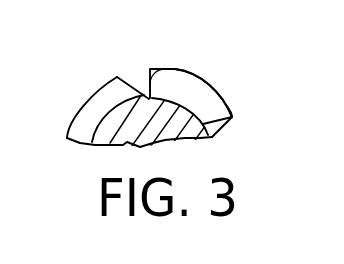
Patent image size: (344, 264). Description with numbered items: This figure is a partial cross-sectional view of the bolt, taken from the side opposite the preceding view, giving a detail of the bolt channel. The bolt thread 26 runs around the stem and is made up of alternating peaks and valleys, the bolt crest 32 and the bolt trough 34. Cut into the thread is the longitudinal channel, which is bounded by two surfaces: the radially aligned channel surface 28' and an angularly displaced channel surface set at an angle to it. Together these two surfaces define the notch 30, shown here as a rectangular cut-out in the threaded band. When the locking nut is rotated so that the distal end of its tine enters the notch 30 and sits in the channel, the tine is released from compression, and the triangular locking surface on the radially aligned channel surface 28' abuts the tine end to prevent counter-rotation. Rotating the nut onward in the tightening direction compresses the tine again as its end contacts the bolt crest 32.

The bolt thread 26 is at (200, 80).
The radially aligned channel surface 28' is at (198, 69).
The notch 30 is at (144, 77).
The bolt crest 32 is at (229, 110).
The bolt trough 34 is at (233, 117).